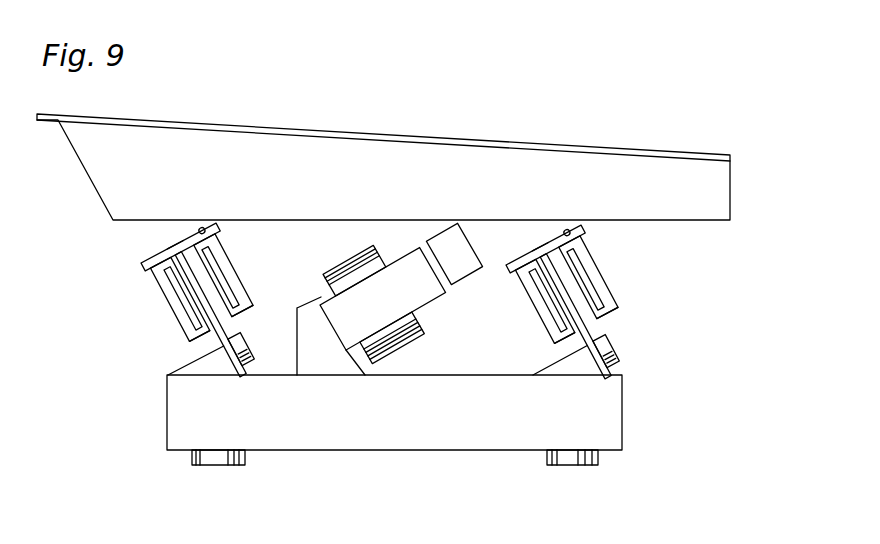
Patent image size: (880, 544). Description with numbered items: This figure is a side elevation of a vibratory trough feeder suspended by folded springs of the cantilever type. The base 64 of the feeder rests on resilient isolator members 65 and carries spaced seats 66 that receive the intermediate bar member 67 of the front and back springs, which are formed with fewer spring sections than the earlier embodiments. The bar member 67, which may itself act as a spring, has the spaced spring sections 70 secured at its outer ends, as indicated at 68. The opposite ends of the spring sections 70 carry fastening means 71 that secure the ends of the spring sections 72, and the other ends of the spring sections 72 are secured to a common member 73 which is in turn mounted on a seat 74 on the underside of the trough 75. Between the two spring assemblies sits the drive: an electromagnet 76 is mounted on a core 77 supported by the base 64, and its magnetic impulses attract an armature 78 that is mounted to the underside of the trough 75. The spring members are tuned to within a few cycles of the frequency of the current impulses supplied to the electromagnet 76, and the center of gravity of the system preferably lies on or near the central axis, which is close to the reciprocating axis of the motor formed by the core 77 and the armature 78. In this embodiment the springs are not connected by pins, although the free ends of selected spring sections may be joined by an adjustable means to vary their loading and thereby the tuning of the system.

The base 64 is at (410, 403).
The resilient isolator members 65 is at (220, 466).
The spaced seats 66 is at (229, 354).
The intermediate bar member 67 is at (230, 328).
The securing points of spring sections to bar member 68 is at (185, 266).
The spaced spring sections 70 is at (210, 271).
The fastening means 71 is at (192, 337).
The spring sections 72 is at (215, 247).
The common member 73 is at (177, 248).
The seat 74 is at (203, 228).
The trough 75 is at (326, 157).
The electromagnet 76 is at (352, 270).
The core 77 is at (372, 307).
The armature 78 is at (465, 268).